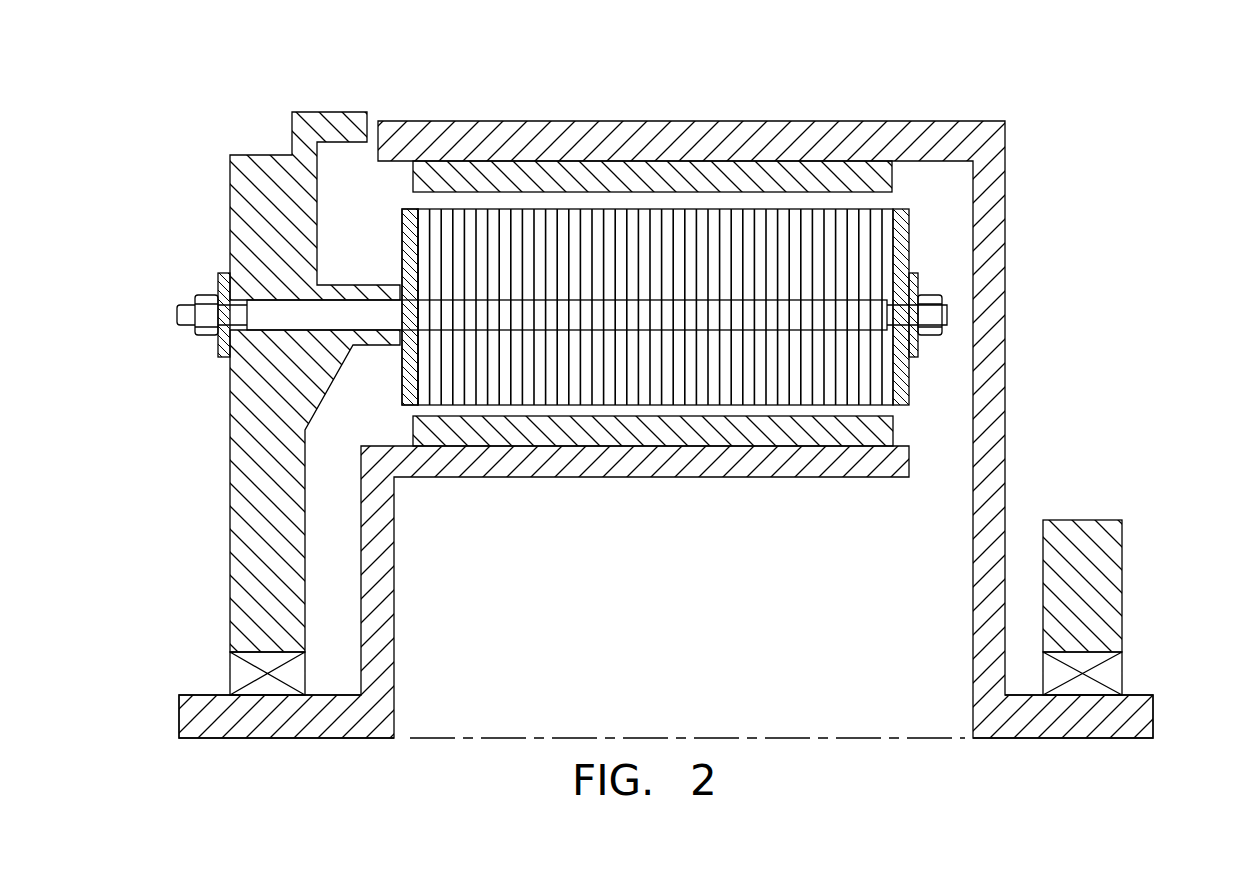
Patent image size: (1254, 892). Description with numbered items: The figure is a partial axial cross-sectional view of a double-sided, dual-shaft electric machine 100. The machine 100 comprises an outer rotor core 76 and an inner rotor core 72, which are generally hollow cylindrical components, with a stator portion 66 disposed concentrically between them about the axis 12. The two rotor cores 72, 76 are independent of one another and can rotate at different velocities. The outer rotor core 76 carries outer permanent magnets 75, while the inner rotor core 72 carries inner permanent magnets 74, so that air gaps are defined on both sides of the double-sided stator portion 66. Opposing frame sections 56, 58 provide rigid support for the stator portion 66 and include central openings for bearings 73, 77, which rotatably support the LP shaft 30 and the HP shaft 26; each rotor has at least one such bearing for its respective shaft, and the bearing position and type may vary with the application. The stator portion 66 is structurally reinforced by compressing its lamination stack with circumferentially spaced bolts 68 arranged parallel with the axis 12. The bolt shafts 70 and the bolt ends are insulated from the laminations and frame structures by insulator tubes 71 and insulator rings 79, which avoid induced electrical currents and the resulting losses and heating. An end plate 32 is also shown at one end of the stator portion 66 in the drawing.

The double-sided, dual-shaft electric machine 100 is at (697, 76).
The outer rotor core 76 is at (745, 121).
The outer permanent magnets 75 is at (829, 168).
The stator portion 66 is at (868, 220).
The insulator rings 79 is at (228, 273).
The bolt shafts 70 is at (331, 312).
The insulator tubes 71 is at (410, 307).
The bolts 68 is at (947, 312).
The end plate 32 is at (898, 405).
The inner permanent magnets 74 is at (718, 437).
The frame section 56 is at (230, 495).
The inner rotor core 72 is at (398, 580).
The bearing 73 is at (217, 658).
The HP shaft 26 is at (179, 710).
The axis 12 is at (727, 738).
The frame section 58 is at (1080, 520).
The bearing 77 is at (1136, 655).
The LP shaft 30 is at (1153, 697).